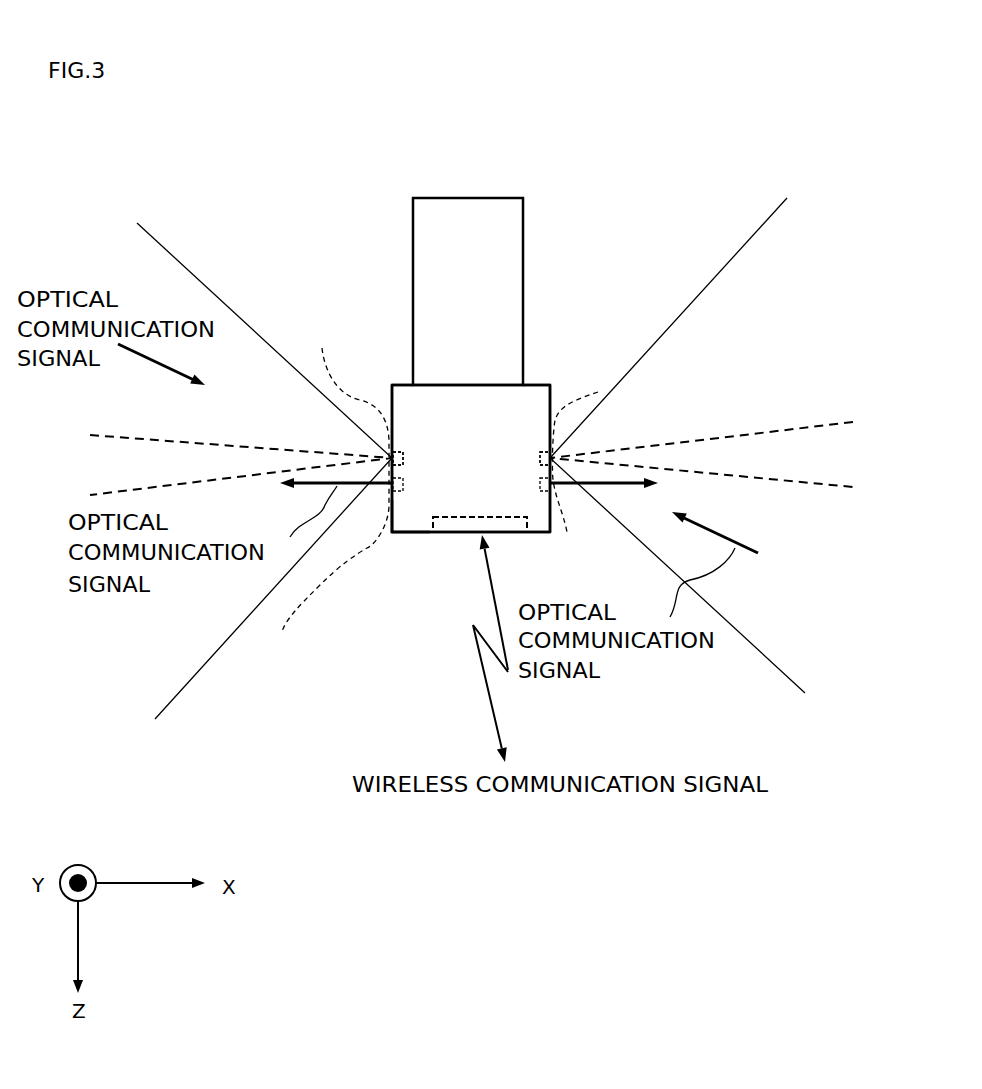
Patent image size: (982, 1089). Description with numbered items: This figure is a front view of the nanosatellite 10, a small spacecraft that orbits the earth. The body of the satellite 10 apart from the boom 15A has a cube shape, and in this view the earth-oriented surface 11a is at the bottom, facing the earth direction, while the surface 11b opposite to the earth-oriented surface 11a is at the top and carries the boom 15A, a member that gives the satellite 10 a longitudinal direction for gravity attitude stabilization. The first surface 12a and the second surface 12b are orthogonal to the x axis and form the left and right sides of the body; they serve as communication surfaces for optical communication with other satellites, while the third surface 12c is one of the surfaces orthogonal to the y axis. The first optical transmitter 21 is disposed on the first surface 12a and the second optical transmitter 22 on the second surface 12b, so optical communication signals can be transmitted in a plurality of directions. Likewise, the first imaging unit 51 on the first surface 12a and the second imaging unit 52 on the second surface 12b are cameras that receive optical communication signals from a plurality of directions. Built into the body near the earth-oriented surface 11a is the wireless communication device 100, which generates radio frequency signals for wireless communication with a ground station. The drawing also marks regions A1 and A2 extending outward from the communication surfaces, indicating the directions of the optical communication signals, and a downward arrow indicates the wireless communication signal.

The nanosatellite 10 is at (577, 198).
The boom 15A is at (432, 215).
The earth-oriented surface 11a is at (423, 533).
The surface opposite to the earth-oriented surface 11b is at (527, 382).
The first surface 12a is at (392, 395).
The second surface 12b is at (553, 398).
The third surface 12c is at (397, 523).
The wireless communication device 100 is at (468, 533).
The first optical transmitter 21 is at (335, 505).
The second optical transmitter 22 is at (569, 478).
The first imaging unit 51 is at (345, 392).
The second imaging unit 52 is at (598, 392).
The optical communication range A1 is at (167, 250).
The optical axis range A2 is at (197, 440).